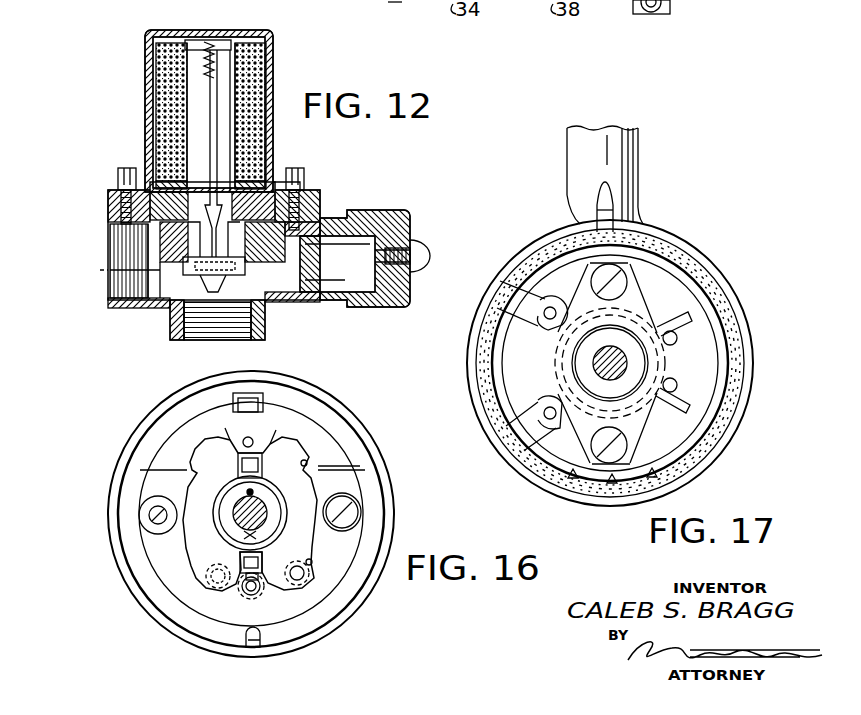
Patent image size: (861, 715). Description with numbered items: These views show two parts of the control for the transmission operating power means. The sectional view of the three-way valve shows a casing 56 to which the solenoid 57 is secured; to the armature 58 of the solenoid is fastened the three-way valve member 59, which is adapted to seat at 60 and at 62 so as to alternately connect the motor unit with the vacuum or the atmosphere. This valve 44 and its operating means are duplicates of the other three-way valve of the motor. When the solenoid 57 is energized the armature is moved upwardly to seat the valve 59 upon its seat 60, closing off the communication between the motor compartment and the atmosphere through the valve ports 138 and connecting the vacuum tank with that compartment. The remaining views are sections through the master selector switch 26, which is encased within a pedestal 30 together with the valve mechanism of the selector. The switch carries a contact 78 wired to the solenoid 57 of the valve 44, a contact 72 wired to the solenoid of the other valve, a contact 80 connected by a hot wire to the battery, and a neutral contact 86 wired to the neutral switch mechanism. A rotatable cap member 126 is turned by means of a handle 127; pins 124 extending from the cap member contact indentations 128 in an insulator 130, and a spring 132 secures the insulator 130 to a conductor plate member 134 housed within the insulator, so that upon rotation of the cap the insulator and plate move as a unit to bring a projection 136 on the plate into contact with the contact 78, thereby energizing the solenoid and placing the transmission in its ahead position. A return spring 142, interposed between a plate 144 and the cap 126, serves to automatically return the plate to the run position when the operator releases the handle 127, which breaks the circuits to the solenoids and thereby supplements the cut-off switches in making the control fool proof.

In FIG. 12, the three-way valve 44 is at (143, 110).
In FIG. 12, the solenoid 57 is at (272, 66).
In FIG. 12, the armature 58 is at (195, 62).
In FIG. 12, the casing 56 is at (108, 217).
In FIG. 12, the three-way valve member 59 is at (193, 268).
In FIG. 12, the valve seat 60 is at (245, 228).
In FIG. 12, the valve seat 62 is at (259, 294).
In FIG. 12, the valve ports 138 is at (274, 180).
In FIG. 16, the pedestal 30 is at (325, 414).
In FIG. 16, the insulator 130 is at (288, 455).
In FIG. 16, the master selector switch 26 is at (303, 493).
In FIG. 16, the contact 80 is at (317, 463).
In FIG. 16, the conductor plate member 134 is at (257, 452).
In FIG. 16, the projection 136 is at (244, 440).
In FIG. 16, the spring 132 is at (240, 434).
In FIG. 16, the indentations 128 is at (305, 462).
In FIG. 16, the contact 78 is at (206, 586).
In FIG. 16, the neutral contact 86 is at (243, 596).
In FIG. 16, the contact 72 is at (303, 590).
In FIG. 17, the cap member 126 is at (700, 256).
In FIG. 17, the handle 127 is at (622, 152).
In FIG. 17, the plate 144 is at (635, 293).
In FIG. 17, the pins 124 is at (545, 315).
In FIG. 17, the return spring 142 is at (655, 329).